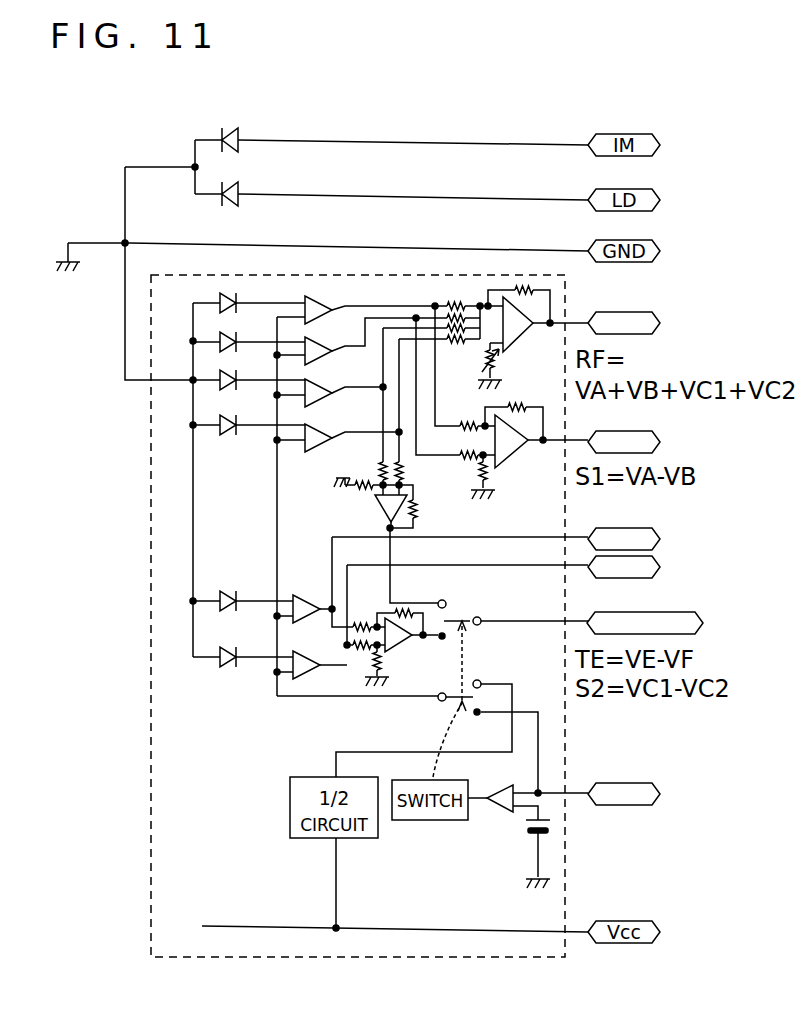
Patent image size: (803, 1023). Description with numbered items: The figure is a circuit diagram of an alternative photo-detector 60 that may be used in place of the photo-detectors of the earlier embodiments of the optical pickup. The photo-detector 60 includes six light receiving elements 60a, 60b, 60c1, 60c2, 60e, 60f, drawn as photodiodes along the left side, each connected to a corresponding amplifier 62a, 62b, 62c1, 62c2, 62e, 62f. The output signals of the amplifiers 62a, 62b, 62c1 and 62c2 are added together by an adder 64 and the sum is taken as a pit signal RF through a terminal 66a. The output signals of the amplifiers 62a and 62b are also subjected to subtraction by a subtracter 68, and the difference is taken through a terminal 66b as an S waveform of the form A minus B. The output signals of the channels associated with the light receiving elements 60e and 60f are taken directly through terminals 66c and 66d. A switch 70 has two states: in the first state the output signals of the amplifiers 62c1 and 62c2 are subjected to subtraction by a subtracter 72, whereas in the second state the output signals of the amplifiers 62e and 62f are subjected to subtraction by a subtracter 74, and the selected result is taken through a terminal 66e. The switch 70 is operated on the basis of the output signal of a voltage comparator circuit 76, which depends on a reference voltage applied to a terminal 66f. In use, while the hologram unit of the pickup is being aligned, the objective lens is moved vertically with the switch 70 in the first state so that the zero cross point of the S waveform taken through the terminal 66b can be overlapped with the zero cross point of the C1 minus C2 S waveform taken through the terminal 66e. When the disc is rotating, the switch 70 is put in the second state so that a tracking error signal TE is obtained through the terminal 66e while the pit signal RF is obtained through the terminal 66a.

The photo-detector 60 is at (132, 132).
The light receiving element 60a is at (215, 298).
The light receiving element 60b is at (215, 338).
The light receiving element 60c1 is at (215, 390).
The light receiving element 60c2 is at (215, 430).
The light receiving element 60e is at (215, 594).
The light receiving element 60f is at (215, 662).
The amplifier 62a is at (319, 305).
The amplifier 62b is at (319, 350).
The amplifier 62c1 is at (318, 391).
The amplifier 62c2 is at (318, 435).
The amplifier 62e is at (305, 598).
The amplifier 62f is at (297, 679).
The adder 64 is at (509, 338).
The terminal 66a is at (655, 317).
The terminal 66b is at (655, 436).
The terminal 66c is at (655, 533).
The terminal 66d is at (655, 562).
The terminal 66e is at (700, 615).
The terminal 66f is at (655, 790).
The subtracter 68 is at (508, 455).
The switch 70 is at (477, 608).
The subtracter 72 is at (381, 503).
The subtracter 74 is at (402, 650).
The voltage comparator circuit 76 is at (510, 833).